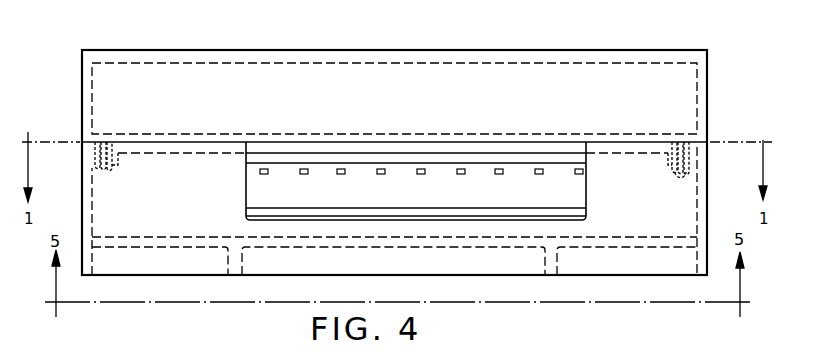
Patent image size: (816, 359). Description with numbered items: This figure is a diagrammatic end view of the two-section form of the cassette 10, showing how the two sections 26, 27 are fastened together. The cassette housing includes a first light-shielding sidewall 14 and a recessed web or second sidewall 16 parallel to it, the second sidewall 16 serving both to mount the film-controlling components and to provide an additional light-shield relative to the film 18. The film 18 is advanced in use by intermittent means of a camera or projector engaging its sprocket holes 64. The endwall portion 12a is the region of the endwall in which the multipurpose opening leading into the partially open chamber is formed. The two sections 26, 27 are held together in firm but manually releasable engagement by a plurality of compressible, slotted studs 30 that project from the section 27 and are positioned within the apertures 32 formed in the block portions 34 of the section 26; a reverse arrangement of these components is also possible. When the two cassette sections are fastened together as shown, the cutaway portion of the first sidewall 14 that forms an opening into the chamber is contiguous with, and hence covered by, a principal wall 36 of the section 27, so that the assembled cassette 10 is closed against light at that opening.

The cassette 10 is at (716, 91).
The cassette section 27 is at (524, 51).
The principal wall 36 is at (447, 133).
The endwall portion 12a is at (394, 208).
The film 18 is at (368, 197).
The film sprocket holes 64 is at (421, 175).
The first light-shielding sidewall 14 is at (616, 156).
The block portions 34 is at (668, 158).
The apertures 32 is at (688, 160).
The compressible studs 30 is at (681, 174).
The second sidewall 16 is at (392, 250).
The cassette section 26 is at (566, 276).